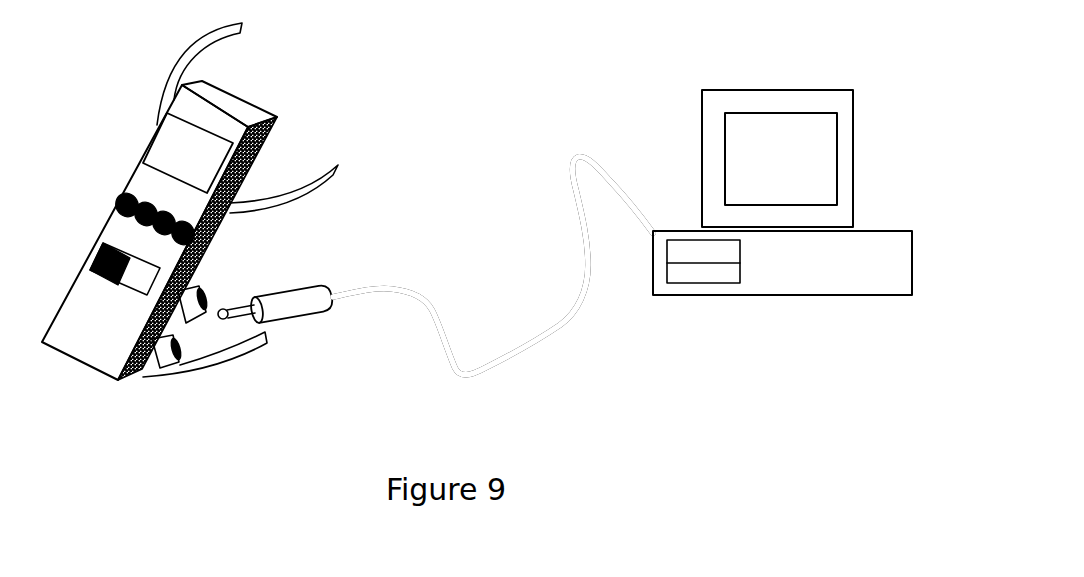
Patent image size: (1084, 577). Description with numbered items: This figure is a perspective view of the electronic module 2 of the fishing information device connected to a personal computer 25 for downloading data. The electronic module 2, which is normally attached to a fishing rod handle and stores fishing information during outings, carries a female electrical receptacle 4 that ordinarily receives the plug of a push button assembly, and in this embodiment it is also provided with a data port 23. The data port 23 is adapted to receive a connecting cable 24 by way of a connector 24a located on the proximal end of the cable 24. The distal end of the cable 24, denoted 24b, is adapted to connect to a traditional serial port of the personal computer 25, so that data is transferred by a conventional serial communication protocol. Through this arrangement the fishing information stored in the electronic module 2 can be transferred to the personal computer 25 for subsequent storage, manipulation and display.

The electronic module 2 is at (355, 207).
The female electrical receptacle 4 is at (172, 378).
The data port 23 is at (203, 339).
The connecting cable 24 is at (556, 350).
The connector 24a is at (296, 326).
The distal end of cable 24b is at (656, 218).
The personal computer 25 is at (765, 308).